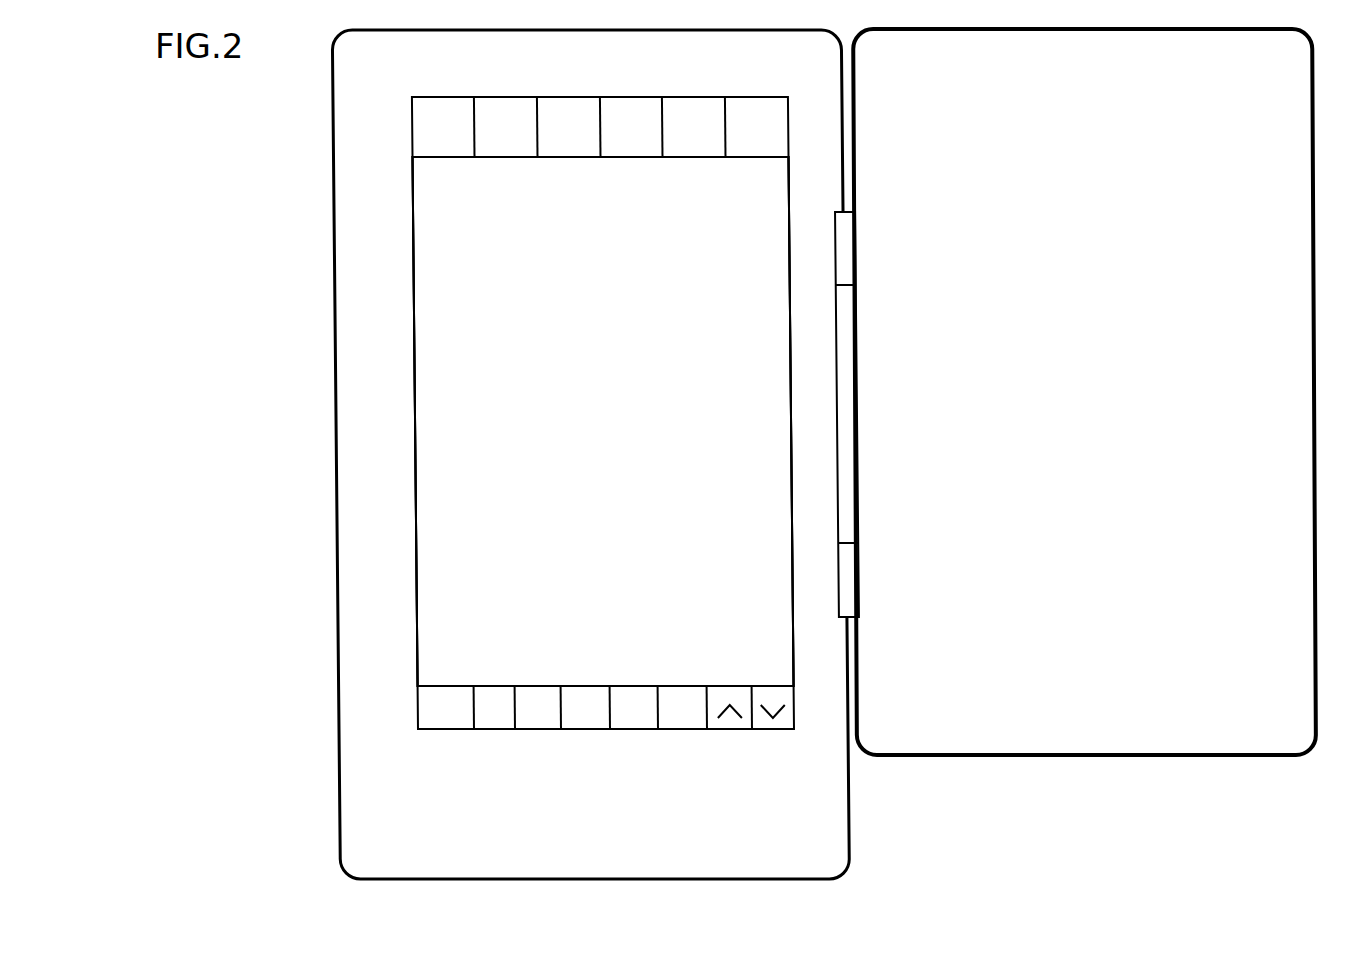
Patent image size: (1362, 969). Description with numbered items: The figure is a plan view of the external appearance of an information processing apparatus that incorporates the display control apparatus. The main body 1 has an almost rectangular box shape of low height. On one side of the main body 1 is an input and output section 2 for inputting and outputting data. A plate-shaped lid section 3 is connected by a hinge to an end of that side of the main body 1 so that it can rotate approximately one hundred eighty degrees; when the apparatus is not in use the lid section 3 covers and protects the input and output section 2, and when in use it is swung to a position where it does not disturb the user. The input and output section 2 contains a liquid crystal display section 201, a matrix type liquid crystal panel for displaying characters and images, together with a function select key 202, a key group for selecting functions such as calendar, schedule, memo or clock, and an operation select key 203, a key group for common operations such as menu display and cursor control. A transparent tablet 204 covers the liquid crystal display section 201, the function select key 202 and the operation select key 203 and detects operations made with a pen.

The main body 1 is at (331, 72).
The input and output section 2 is at (412, 390).
The lid section 3 is at (1314, 70).
The liquid crystal display section 201 is at (427, 204).
The function select key 202 is at (439, 123).
The operation select key 203 is at (481, 715).
The transparent tablet 204 is at (432, 237).